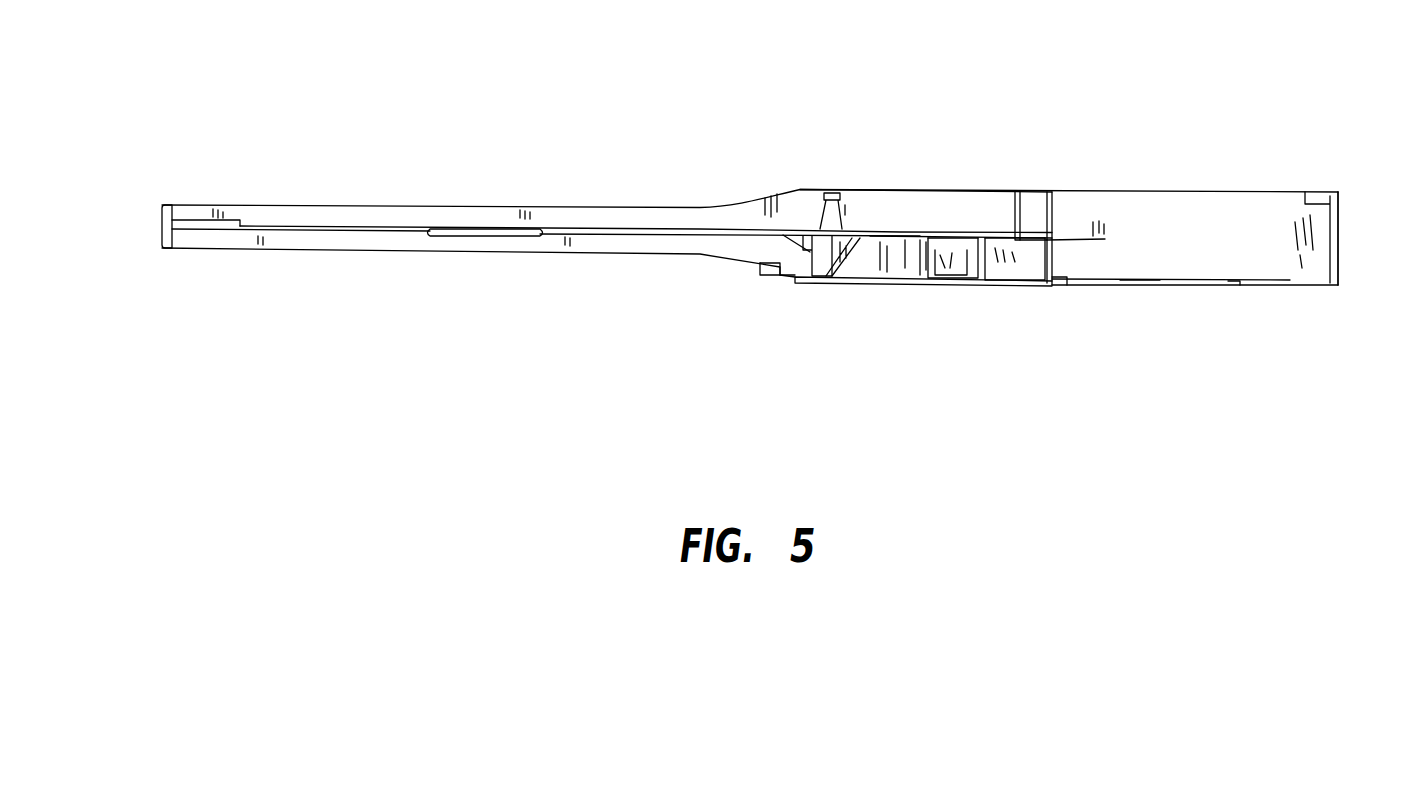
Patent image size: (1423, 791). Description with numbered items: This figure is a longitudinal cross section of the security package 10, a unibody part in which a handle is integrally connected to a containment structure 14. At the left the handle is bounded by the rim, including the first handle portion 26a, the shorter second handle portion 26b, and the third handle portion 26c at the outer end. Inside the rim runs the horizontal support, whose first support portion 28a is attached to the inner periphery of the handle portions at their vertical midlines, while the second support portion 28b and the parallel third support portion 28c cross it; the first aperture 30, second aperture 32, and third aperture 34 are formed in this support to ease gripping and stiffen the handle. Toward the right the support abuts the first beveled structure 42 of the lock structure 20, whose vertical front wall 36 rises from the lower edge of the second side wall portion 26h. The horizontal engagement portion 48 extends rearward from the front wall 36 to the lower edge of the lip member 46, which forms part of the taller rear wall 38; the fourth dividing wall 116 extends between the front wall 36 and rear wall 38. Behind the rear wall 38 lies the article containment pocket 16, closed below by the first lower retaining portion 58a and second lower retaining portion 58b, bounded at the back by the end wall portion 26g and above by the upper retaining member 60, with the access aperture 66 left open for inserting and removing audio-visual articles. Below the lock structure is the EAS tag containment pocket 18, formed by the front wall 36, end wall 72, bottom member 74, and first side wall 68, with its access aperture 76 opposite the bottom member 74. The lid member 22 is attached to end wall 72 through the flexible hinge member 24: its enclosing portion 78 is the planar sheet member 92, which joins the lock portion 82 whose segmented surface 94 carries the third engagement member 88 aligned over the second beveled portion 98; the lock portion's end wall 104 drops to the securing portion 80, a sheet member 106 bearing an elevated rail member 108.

The security package 10 is at (463, 320).
The containment structure 14 is at (1078, 88).
The article containment pocket 16 is at (1273, 186).
The EAS tag containment pocket 18 is at (968, 285).
The lock structure 20 is at (1020, 168).
The lid member 22 is at (855, 224).
The hinge member 24 is at (925, 235).
The first handle portion 26a is at (890, 190).
The second handle portion 26b is at (325, 204).
The third handle portion 26c is at (162, 235).
The end wall portion 26g is at (1340, 212).
The second side wall portion 26h is at (1225, 192).
The first support portion 28a is at (178, 221).
The second support portion 28b is at (438, 227).
The third support portion 28c is at (715, 228).
The first aperture 30 is at (262, 216).
The second aperture 32 is at (574, 228).
The third aperture 34 is at (747, 217).
The front wall 36 is at (965, 252).
The rear wall 38 is at (1106, 231).
The first beveled structure 42 is at (1025, 195).
The lip member 46 is at (1061, 211).
The engagement portion 48 is at (990, 283).
The first lower retaining portion 58a is at (1067, 287).
The second lower retaining portion 58b is at (1240, 287).
The upper retaining member 60 is at (1323, 194).
The access aperture 66 is at (1170, 191).
The first side wall 68 is at (1003, 235).
The end wall 72 is at (950, 235).
The bottom member 74 is at (958, 235).
The access aperture 76 is at (980, 235).
The enclosing portion 78 is at (900, 270).
The securing portion 80 is at (787, 282).
The lock portion 82 is at (830, 283).
The third engagement member 88 is at (818, 205).
The sheet member 92 is at (908, 280).
The segmented surface 94 is at (922, 215).
The second beveled portion 98 is at (857, 277).
The end wall 104 is at (767, 229).
The sheet member 106 is at (770, 267).
The rail member 108 is at (773, 262).
The fourth dividing wall 116 is at (1027, 283).